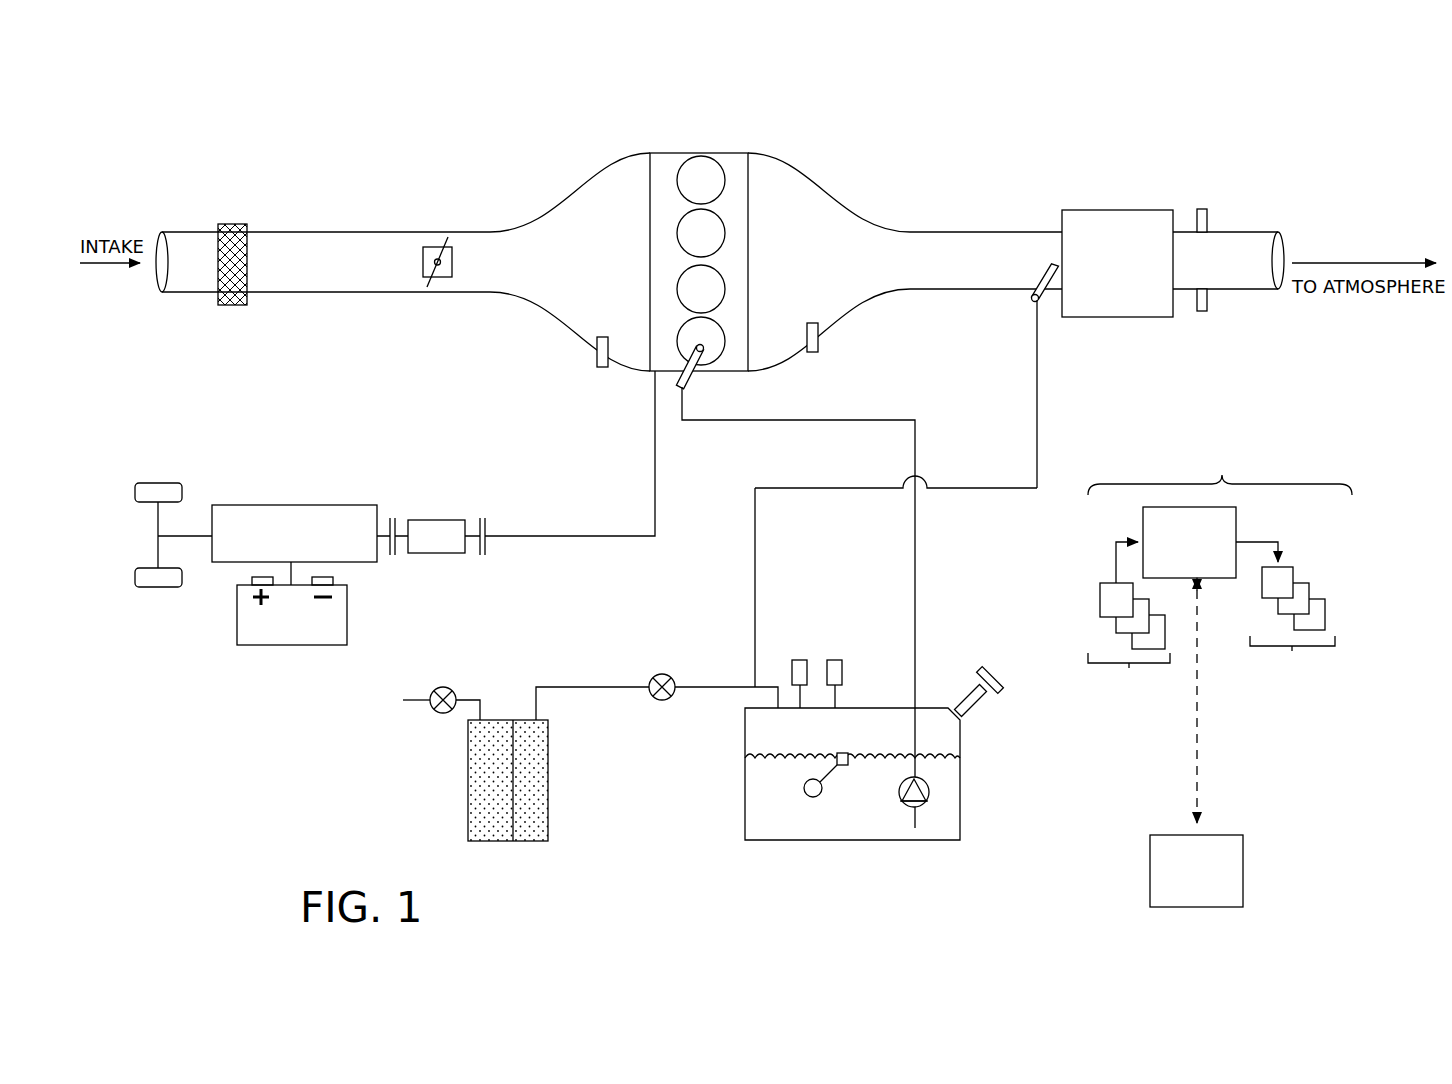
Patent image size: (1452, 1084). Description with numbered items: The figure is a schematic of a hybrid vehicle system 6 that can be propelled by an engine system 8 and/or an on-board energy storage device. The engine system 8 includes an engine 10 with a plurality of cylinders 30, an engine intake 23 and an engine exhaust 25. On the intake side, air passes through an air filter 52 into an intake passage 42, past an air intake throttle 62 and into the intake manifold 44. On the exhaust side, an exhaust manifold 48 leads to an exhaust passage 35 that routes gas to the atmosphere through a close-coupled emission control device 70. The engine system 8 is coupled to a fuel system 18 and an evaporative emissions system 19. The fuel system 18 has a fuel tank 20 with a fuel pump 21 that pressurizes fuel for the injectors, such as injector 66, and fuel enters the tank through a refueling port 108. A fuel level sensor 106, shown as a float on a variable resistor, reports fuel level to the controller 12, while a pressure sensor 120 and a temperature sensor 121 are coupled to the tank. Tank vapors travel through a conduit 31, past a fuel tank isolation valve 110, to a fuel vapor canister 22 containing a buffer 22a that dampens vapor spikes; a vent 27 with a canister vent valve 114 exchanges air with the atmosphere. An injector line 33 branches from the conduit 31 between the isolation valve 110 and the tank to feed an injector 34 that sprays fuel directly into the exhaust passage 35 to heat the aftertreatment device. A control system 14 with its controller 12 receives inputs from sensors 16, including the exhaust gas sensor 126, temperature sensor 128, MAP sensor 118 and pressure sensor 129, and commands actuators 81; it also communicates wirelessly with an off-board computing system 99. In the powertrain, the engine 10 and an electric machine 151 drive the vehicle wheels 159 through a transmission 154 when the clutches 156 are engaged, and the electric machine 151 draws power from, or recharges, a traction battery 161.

The hybrid vehicle system 6 is at (182, 130).
The engine system 8 is at (1310, 128).
The engine 10 is at (717, 262).
The controller 12 is at (1189, 542).
The control system 14 is at (1220, 570).
The sensors 16 is at (1129, 625).
The fuel system 18 is at (1000, 860).
The evaporative emissions system 19 is at (583, 890).
The fuel tank 20 is at (882, 752).
The fuel pump 21 is at (928, 800).
The fuel vapor canister 22 is at (544, 777).
The buffer 22a is at (530, 841).
The engine intake 23 is at (573, 183).
The engine exhaust 25 is at (865, 190).
The vent 27 is at (415, 700).
The cylinders 30 is at (720, 174).
The conduit 31 is at (700, 687).
The injector line 33 is at (820, 487).
The injector 34 is at (1052, 265).
The exhaust passage 35 is at (1252, 232).
The intake passage 42 is at (196, 294).
The intake manifold 44 is at (615, 272).
The exhaust manifold 48 is at (837, 272).
The air filter 52 is at (232, 224).
The air intake throttle 62 is at (452, 270).
The fuel injector 66 is at (690, 380).
The emission control device 70 is at (1100, 210).
The actuators 81 is at (1285, 617).
The off-board computing system 99 is at (1196, 742).
The fuel level sensor 106 is at (840, 752).
The refueling port 108 is at (992, 672).
The fuel tank isolation valve 110 is at (653, 676).
The canister vent valve 114 is at (450, 672).
The MAP sensor 118 is at (597, 344).
The pressure sensor 120 is at (842, 672).
The temperature sensor 121 is at (802, 660).
The exhaust gas sensor 126 is at (818, 330).
The temperature sensor 128 is at (1202, 311).
The pressure sensor 129 is at (1202, 209).
The electric machine 151 is at (436, 553).
The transmission 154 is at (235, 562).
The clutches 156 is at (395, 522).
The vehicle wheels 159 is at (158, 587).
The traction battery 161 is at (296, 645).